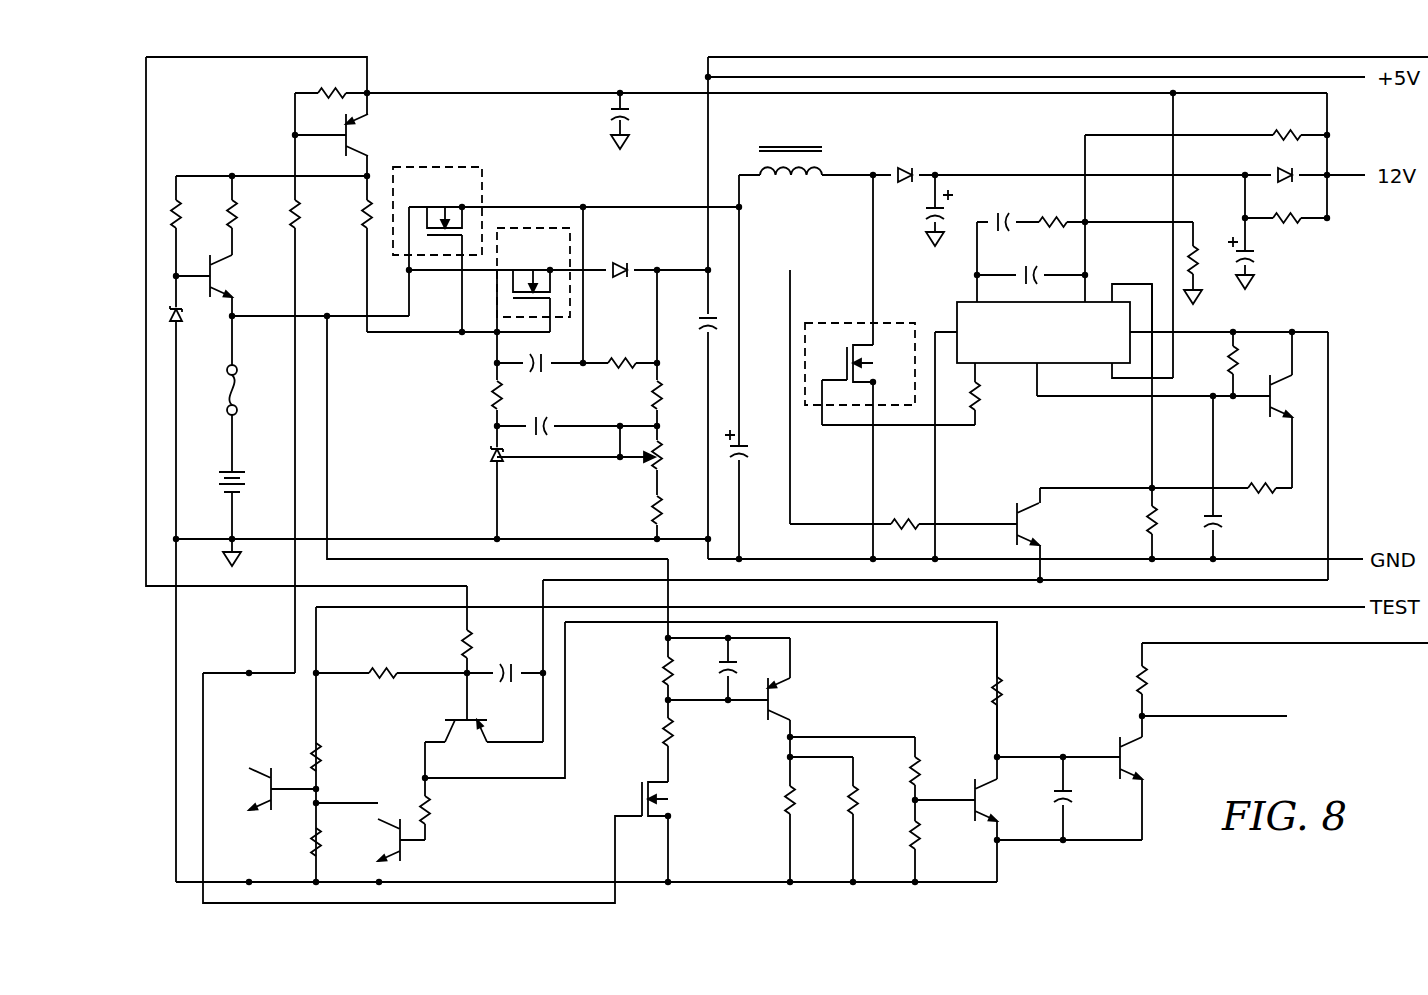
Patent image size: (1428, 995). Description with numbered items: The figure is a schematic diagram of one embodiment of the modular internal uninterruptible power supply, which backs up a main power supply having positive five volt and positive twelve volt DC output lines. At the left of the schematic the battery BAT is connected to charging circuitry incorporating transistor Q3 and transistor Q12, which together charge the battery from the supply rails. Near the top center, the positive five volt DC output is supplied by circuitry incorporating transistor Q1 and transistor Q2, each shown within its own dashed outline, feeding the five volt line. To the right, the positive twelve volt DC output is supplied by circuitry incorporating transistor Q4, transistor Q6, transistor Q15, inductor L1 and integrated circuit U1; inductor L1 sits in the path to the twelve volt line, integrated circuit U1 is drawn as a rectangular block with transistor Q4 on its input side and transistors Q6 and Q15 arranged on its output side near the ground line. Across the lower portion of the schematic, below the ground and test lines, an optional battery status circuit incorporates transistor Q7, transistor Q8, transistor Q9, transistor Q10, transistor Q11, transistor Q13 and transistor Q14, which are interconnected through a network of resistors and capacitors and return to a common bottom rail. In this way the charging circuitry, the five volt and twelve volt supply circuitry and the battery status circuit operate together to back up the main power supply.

The transistor Q1 is at (437, 211).
The transistor Q2 is at (533, 272).
The transistor Q3 is at (235, 276).
The transistor Q4 is at (860, 364).
The transistor Q6 is at (1294, 396).
The transistor Q7 is at (1145, 758).
The transistor Q8 is at (1000, 800).
The transistor Q9 is at (793, 699).
The transistor Q10 is at (244, 789).
The transistor Q11 is at (678, 799).
The transistor Q12 is at (377, 135).
The transistor Q13 is at (373, 840).
The transistor Q14 is at (468, 743).
The transistor Q15 is at (1048, 524).
The integrated circuit U1 is at (1043, 332).
The inductor L1 is at (790, 149).